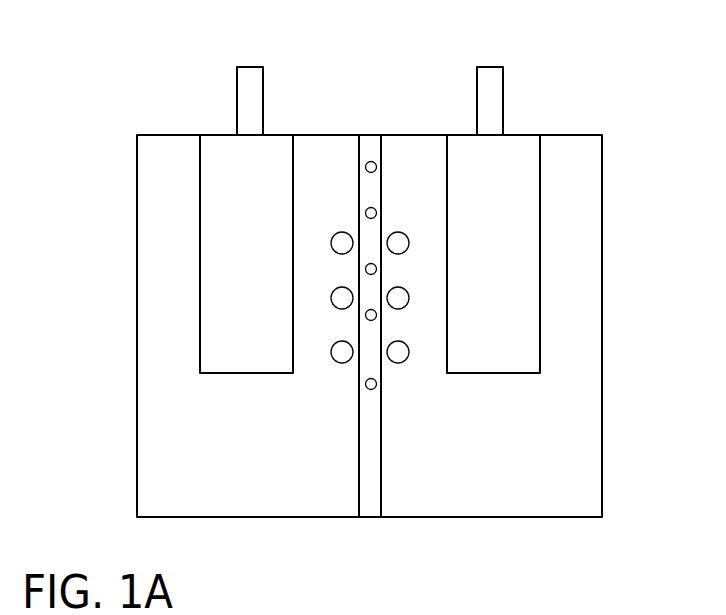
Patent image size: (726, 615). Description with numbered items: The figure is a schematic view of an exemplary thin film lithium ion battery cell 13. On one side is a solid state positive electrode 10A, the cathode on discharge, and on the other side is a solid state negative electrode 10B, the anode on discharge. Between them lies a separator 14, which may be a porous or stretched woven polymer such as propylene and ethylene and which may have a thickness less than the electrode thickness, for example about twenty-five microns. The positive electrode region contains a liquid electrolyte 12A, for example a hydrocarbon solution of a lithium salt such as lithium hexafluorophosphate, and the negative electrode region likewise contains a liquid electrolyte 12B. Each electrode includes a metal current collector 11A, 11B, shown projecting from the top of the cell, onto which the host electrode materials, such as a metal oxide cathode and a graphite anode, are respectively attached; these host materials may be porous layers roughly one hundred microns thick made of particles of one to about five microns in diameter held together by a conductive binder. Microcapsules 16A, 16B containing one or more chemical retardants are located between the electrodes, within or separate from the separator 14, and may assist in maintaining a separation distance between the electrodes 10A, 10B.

The solid state positive electrode 10A is at (232, 168).
The solid state negative electrode 10B is at (495, 182).
The metal current collector 11A is at (263, 67).
The metal current collector 11B is at (492, 66).
The liquid electrolyte 12A is at (187, 425).
The liquid electrolyte 12B is at (558, 457).
The housing 13 is at (603, 357).
The separator 14 is at (370, 145).
The microcapsules 16A is at (333, 361).
The microcapsules 16B is at (377, 316).